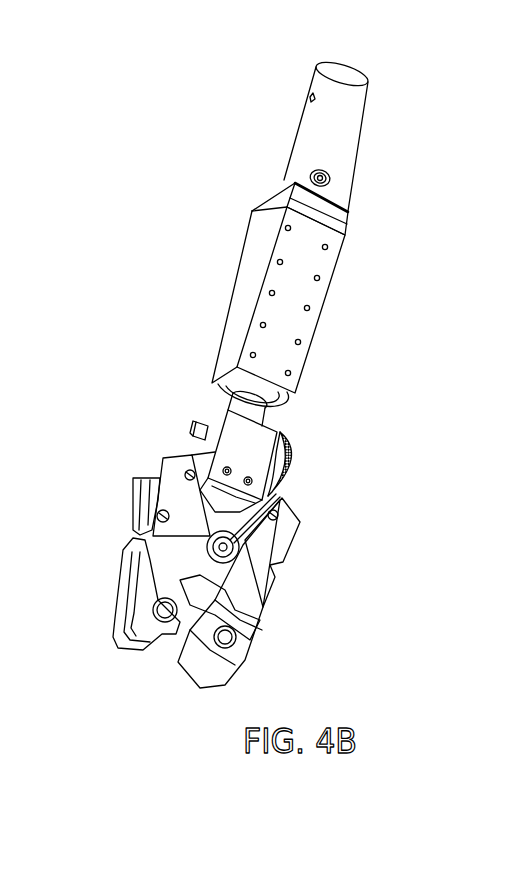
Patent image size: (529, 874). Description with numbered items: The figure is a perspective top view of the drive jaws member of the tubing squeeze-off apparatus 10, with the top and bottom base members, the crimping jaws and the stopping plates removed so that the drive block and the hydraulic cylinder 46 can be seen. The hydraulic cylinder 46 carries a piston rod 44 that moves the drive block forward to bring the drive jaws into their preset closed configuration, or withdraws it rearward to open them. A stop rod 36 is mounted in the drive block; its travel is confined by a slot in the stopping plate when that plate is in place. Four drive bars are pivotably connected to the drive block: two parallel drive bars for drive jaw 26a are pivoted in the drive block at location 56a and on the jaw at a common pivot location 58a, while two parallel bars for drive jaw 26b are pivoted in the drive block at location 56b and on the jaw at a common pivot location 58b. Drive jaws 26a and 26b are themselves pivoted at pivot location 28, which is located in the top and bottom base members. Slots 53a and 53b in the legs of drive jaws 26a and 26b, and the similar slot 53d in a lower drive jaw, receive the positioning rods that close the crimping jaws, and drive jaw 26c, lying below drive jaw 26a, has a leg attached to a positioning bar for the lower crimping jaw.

The squeeze-off apparatus 10 is at (393, 322).
The hydraulic cylinder 46 is at (312, 301).
The piston rod 44 is at (253, 402).
The stop rod 36 is at (198, 425).
The pivot location of first drive bar 56a is at (190, 457).
The pivot location of second drive bar 56b is at (283, 446).
The pivot location on drive jaw 26a 58a is at (186, 474).
The pivot location on drive jaw 26b 58b is at (279, 516).
The pivot location 28 is at (242, 553).
The slot 53a is at (157, 515).
The slot 53b is at (275, 574).
The slot 53d is at (137, 538).
The drive jaw 26a is at (198, 571).
The drive jaw 26b is at (268, 604).
The drive jaw 26c is at (108, 627).